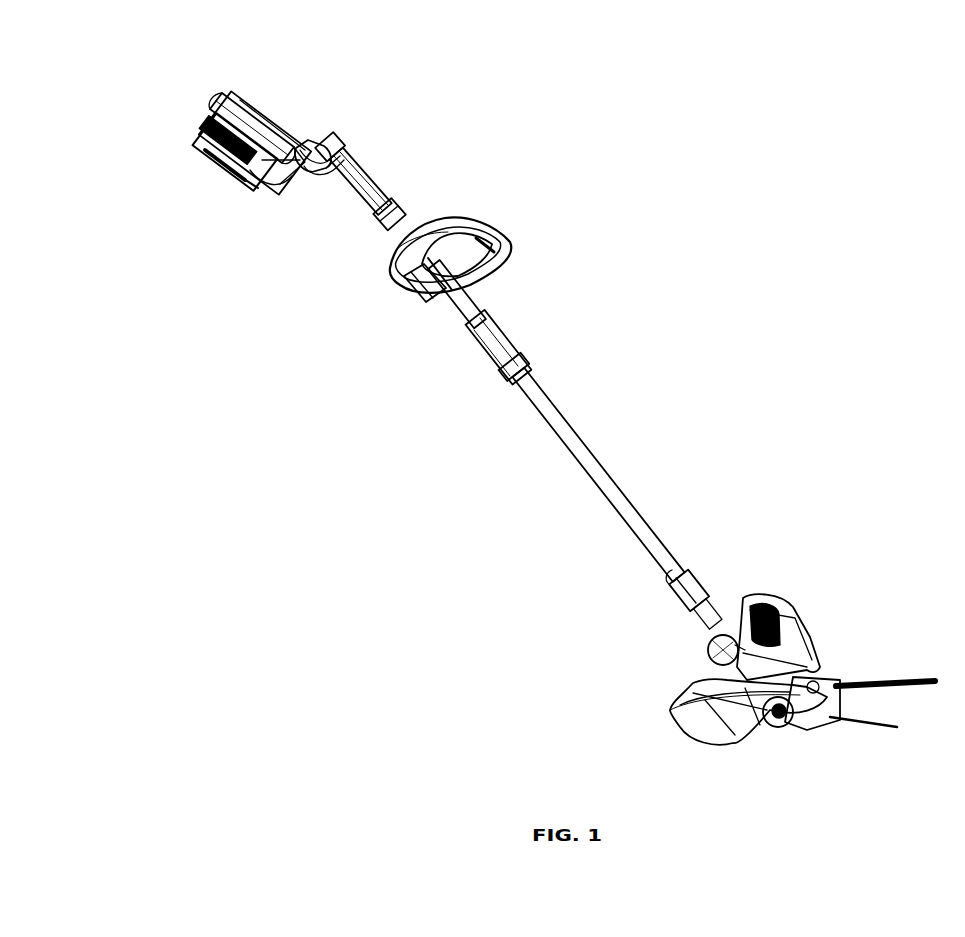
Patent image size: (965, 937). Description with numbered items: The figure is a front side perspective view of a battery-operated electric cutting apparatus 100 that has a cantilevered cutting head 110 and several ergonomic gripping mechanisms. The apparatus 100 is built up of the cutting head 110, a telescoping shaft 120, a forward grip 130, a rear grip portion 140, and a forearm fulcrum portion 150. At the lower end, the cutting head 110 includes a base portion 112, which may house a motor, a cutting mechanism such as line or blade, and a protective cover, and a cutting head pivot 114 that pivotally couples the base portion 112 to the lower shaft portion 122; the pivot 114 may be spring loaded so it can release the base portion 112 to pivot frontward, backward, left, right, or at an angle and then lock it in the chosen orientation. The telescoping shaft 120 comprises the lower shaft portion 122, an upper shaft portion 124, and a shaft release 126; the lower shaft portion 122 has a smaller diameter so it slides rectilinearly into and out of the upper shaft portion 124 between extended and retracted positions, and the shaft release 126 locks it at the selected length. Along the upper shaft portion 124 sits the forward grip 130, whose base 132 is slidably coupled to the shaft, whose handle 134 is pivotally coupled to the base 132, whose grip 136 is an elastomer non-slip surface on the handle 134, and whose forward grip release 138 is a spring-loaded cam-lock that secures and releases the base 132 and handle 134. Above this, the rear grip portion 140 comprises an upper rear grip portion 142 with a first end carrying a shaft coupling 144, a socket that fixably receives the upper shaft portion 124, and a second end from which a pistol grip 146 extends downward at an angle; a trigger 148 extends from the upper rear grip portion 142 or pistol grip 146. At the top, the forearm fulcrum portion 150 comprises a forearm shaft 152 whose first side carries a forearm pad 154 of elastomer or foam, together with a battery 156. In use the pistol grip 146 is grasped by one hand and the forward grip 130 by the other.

The battery-operated electric cutting apparatus 100 is at (157, 266).
The cutting head 110 is at (888, 618).
The base portion 112 is at (797, 697).
The cutting head pivot 114 is at (707, 660).
The telescoping shaft 120 is at (683, 390).
The lower shaft portion 122 is at (594, 470).
The upper shaft portion 124 is at (472, 315).
The shaft release 126 is at (512, 343).
The forward grip 130 is at (558, 214).
The base 132 is at (440, 272).
The handle 134 is at (497, 280).
The grip 136 is at (473, 222).
The forward grip release 138 is at (413, 293).
The rear grip portion 140 is at (452, 118).
The upper rear grip portion 142 is at (380, 170).
The shaft coupling 144 is at (407, 242).
The pistol grip 146 is at (293, 152).
The trigger 148 is at (332, 165).
The forearm fulcrum portion 150 is at (345, 72).
The forearm shaft 152 is at (223, 118).
The forearm pad 154 is at (248, 95).
The battery 156 is at (197, 147).